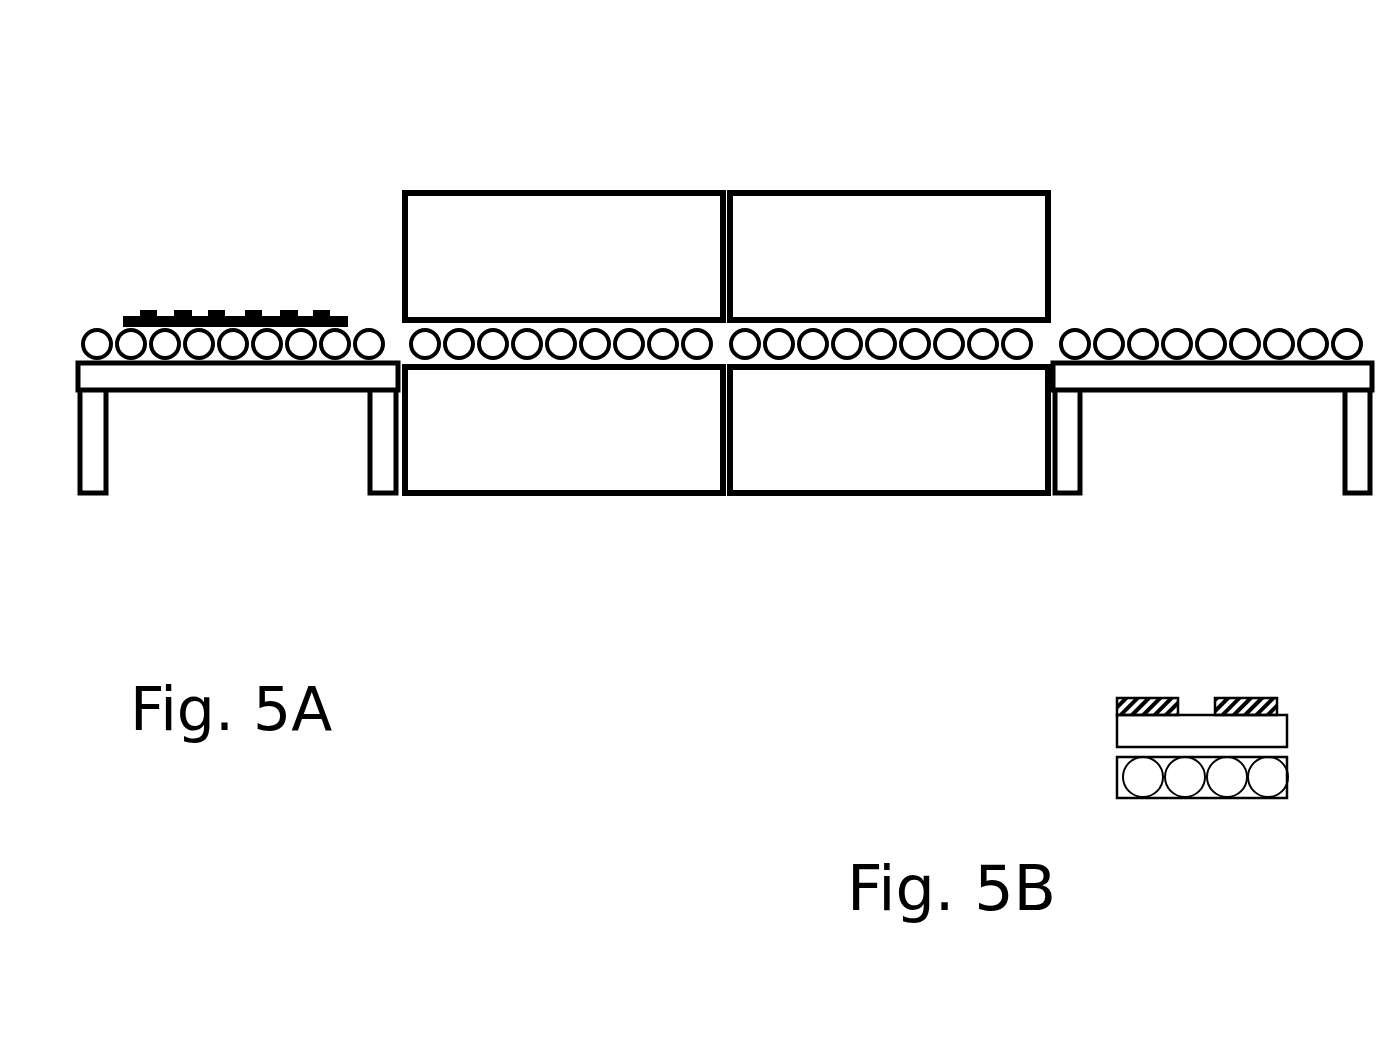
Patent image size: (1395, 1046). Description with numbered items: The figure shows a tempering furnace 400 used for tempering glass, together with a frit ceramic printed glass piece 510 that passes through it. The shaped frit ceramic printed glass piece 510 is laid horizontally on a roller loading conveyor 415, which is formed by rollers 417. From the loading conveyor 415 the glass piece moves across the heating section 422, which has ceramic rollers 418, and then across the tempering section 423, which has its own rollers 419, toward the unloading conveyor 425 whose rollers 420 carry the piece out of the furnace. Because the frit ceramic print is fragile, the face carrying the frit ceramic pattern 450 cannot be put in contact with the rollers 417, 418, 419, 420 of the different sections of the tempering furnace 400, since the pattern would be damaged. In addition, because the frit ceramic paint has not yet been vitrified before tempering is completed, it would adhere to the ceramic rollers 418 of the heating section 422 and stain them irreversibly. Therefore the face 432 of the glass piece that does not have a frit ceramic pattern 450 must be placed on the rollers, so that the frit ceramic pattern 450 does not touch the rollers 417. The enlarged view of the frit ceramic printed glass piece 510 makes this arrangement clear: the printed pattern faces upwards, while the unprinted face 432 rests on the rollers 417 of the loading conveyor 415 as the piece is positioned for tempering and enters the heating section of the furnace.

In FIG. 5A, the tempering furnace 400 is at (746, 85).
In FIG. 5A, the roller loading conveyor 415 is at (160, 400).
In FIG. 5B, the roller loading conveyor 415 is at (1105, 757).
In FIG. 5A, the rollers 417 is at (333, 340).
In FIG. 5B, the rollers 417 is at (1143, 800).
In FIG. 5A, the ceramic rollers 418 is at (593, 338).
In FIG. 5A, the rollers 419 is at (955, 340).
In FIG. 5A, the rollers 420 is at (1245, 323).
In FIG. 5A, the heating section 422 is at (564, 343).
In FIG. 5A, the tempering section 423 is at (889, 343).
In FIG. 5A, the unloading conveyor 425 is at (1323, 395).
In FIG. 5B, the face of the piece of glass without frit ceramic pattern 432 is at (1282, 762).
In FIG. 5A, the frit ceramic pattern 450 is at (257, 307).
In FIG. 5B, the frit ceramic pattern 450 is at (1222, 694).
In FIG. 5A, the frit ceramic printed glass piece 510 is at (112, 306).
In FIG. 5B, the frit ceramic printed glass piece 510 is at (1100, 715).